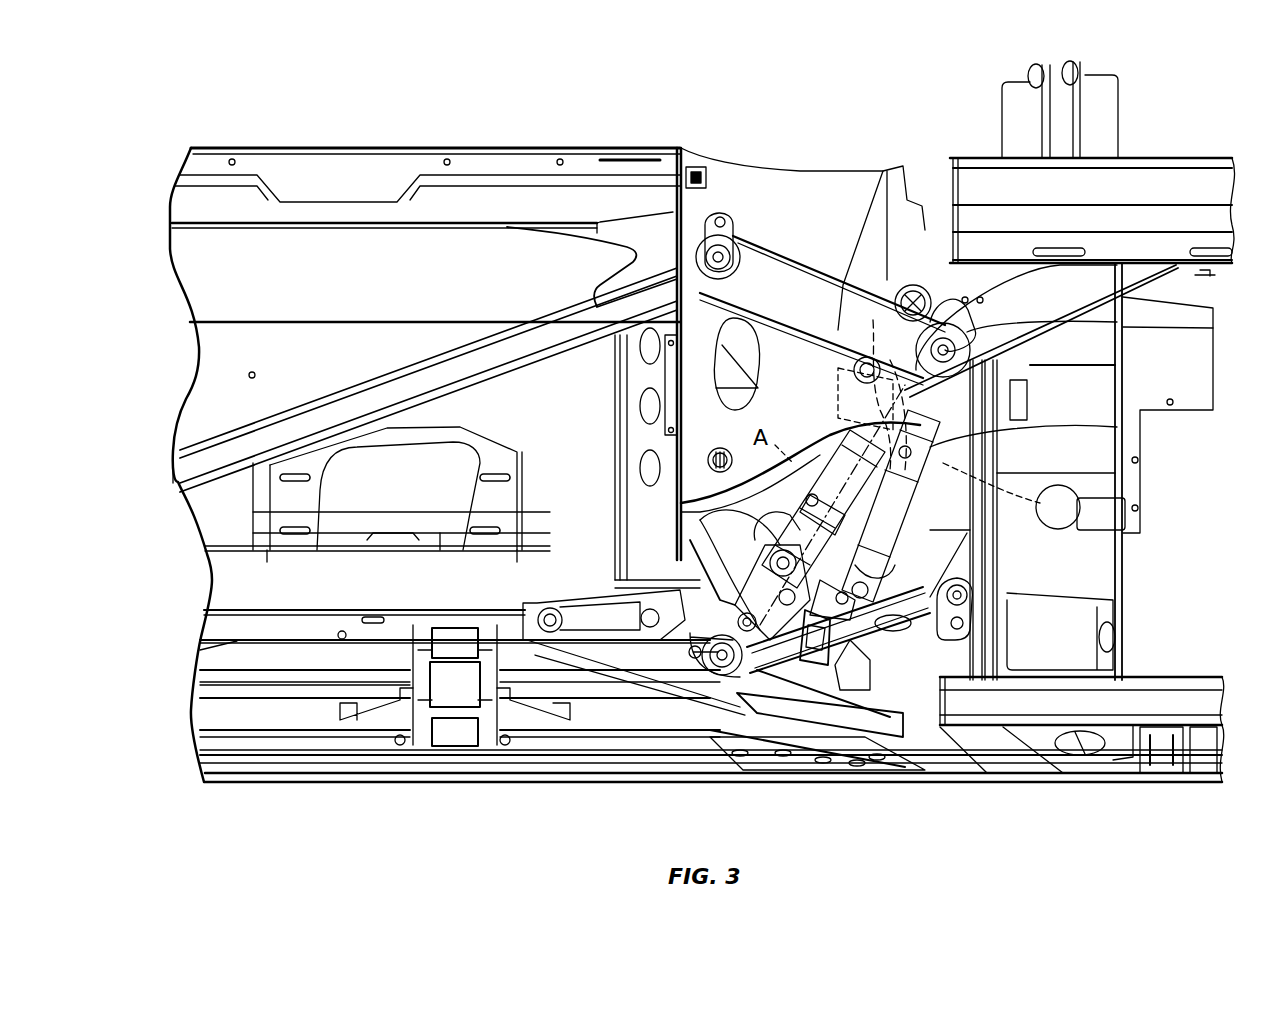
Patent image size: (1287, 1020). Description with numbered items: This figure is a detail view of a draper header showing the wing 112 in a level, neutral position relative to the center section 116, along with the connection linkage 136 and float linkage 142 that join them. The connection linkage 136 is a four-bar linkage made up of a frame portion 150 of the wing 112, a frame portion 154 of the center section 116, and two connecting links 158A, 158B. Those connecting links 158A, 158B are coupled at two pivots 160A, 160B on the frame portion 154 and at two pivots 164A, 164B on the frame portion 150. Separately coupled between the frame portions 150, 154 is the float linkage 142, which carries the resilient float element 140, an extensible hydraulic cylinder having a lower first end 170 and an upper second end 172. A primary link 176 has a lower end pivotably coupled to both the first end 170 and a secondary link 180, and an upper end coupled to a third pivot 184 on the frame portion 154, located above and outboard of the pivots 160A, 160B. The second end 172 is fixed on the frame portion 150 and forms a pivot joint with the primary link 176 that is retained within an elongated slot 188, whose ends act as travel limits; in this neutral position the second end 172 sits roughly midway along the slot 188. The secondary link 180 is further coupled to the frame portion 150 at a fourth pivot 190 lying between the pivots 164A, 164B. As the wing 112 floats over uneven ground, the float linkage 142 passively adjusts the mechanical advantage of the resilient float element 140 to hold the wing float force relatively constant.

The wing 112 is at (252, 128).
The center section 116 is at (1183, 128).
The connection linkage 136 is at (800, 222).
The resilient float element 140 is at (848, 582).
The float linkage 142 is at (722, 600).
The frame portion of the wing 150 is at (567, 493).
The frame portion of the center section 154 is at (1000, 338).
The connecting link 158A is at (763, 268).
The connecting link 158B is at (930, 672).
The pivot 160A is at (1005, 338).
The pivot 160B is at (970, 583).
The pivot 164A is at (697, 388).
The pivot 164B is at (723, 660).
The first end 170 is at (757, 612).
The second end 172 is at (862, 366).
The primary link 176 is at (930, 487).
The secondary link 180 is at (690, 580).
The third pivot 184 is at (915, 285).
The slot 188 is at (873, 320).
The fourth pivot 190 is at (716, 452).